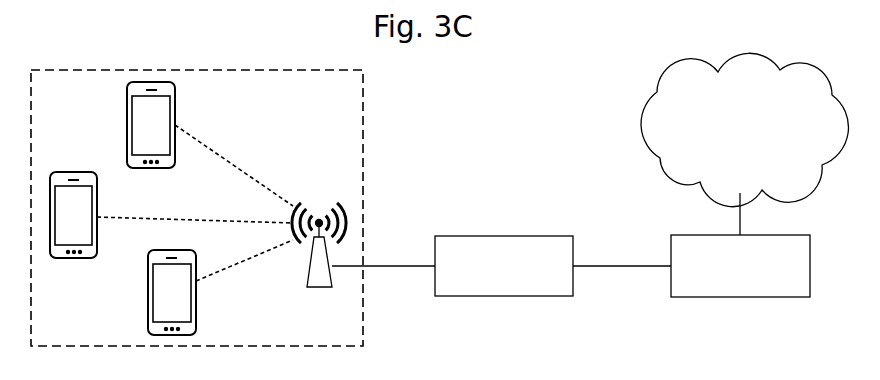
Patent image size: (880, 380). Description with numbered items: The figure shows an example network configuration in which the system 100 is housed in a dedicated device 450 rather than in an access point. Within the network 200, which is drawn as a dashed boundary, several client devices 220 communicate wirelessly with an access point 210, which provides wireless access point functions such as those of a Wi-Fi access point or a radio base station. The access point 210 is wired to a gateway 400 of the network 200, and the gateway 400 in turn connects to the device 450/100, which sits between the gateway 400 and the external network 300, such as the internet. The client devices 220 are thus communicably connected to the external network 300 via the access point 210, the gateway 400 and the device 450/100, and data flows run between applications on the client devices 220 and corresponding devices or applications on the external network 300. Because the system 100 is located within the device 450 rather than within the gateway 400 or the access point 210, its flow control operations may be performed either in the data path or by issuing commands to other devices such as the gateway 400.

The network 200 is at (363, 110).
The client devices 220 is at (175, 88).
The access point 210 is at (318, 288).
The gateway 400 is at (504, 266).
The device 450 is at (740, 266).
The system 100 is at (740, 266).
The external network 300 is at (744, 129).